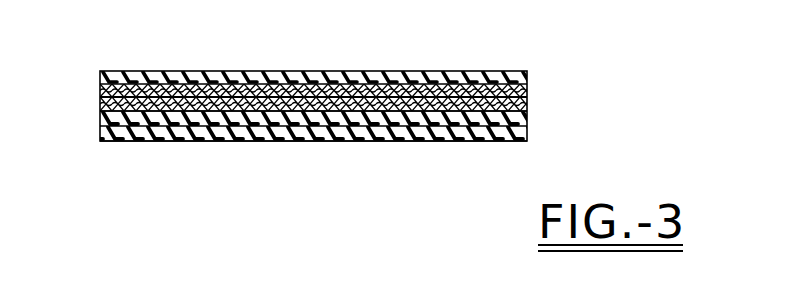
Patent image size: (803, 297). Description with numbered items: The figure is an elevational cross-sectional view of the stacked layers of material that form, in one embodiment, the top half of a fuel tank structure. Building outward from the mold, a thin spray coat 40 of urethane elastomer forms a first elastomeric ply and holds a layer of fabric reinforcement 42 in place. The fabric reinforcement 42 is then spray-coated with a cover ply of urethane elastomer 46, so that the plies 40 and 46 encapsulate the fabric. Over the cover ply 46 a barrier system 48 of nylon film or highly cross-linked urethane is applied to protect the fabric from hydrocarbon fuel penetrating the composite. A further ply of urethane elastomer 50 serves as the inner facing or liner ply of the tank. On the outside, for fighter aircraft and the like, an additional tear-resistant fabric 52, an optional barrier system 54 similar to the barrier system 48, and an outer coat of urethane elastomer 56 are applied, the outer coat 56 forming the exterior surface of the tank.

The spray coat of urethane elastomer 40 is at (100, 98).
The fabric reinforcement 42 is at (180, 112).
The cover ply of urethane elastomer 46 is at (295, 112).
The barrier system 48 is at (411, 127).
The ply of urethane elastomer 50 is at (452, 135).
The tear-resistant fabric 52 is at (177, 88).
The barrier system 54 is at (297, 78).
The outer coat of urethane elastomer 56 is at (407, 72).